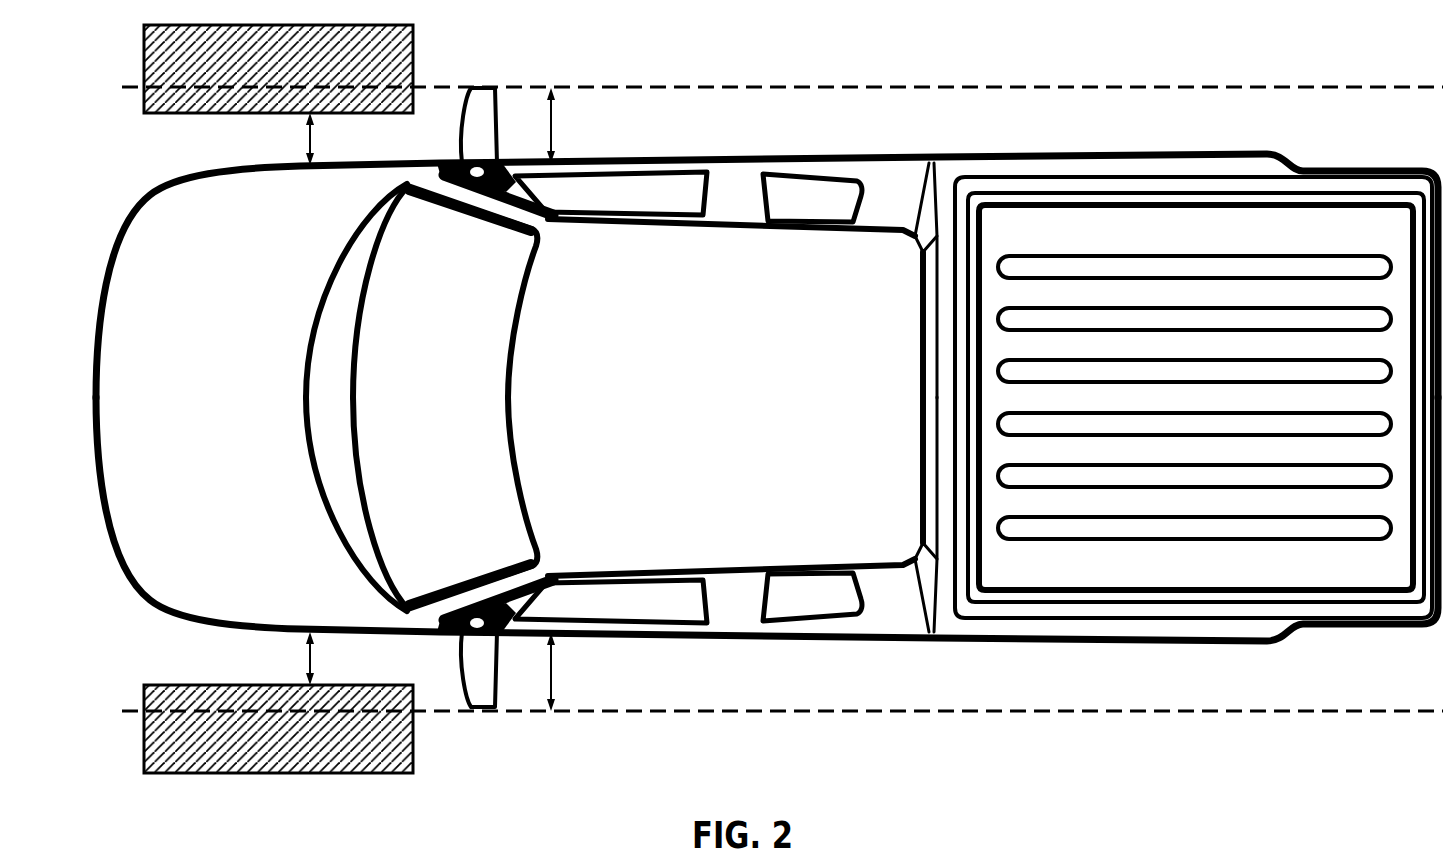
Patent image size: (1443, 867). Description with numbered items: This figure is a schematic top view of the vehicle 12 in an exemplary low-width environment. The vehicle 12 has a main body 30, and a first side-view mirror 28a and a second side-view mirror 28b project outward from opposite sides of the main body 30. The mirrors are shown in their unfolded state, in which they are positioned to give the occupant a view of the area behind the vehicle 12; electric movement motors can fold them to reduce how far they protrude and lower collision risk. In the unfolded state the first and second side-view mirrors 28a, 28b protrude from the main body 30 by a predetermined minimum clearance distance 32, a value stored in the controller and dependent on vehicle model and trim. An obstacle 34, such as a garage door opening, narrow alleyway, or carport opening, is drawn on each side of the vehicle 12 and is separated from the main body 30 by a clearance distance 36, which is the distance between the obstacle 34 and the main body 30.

The vehicle 12 is at (714, 421).
The first side-view mirror 28a is at (497, 680).
The second side-view mirror 28b is at (497, 113).
The main body 30 is at (745, 162).
The predetermined minimum clearance distance 32 is at (553, 126).
The obstacle 34 is at (413, 26).
The clearance distance 36 is at (308, 150).